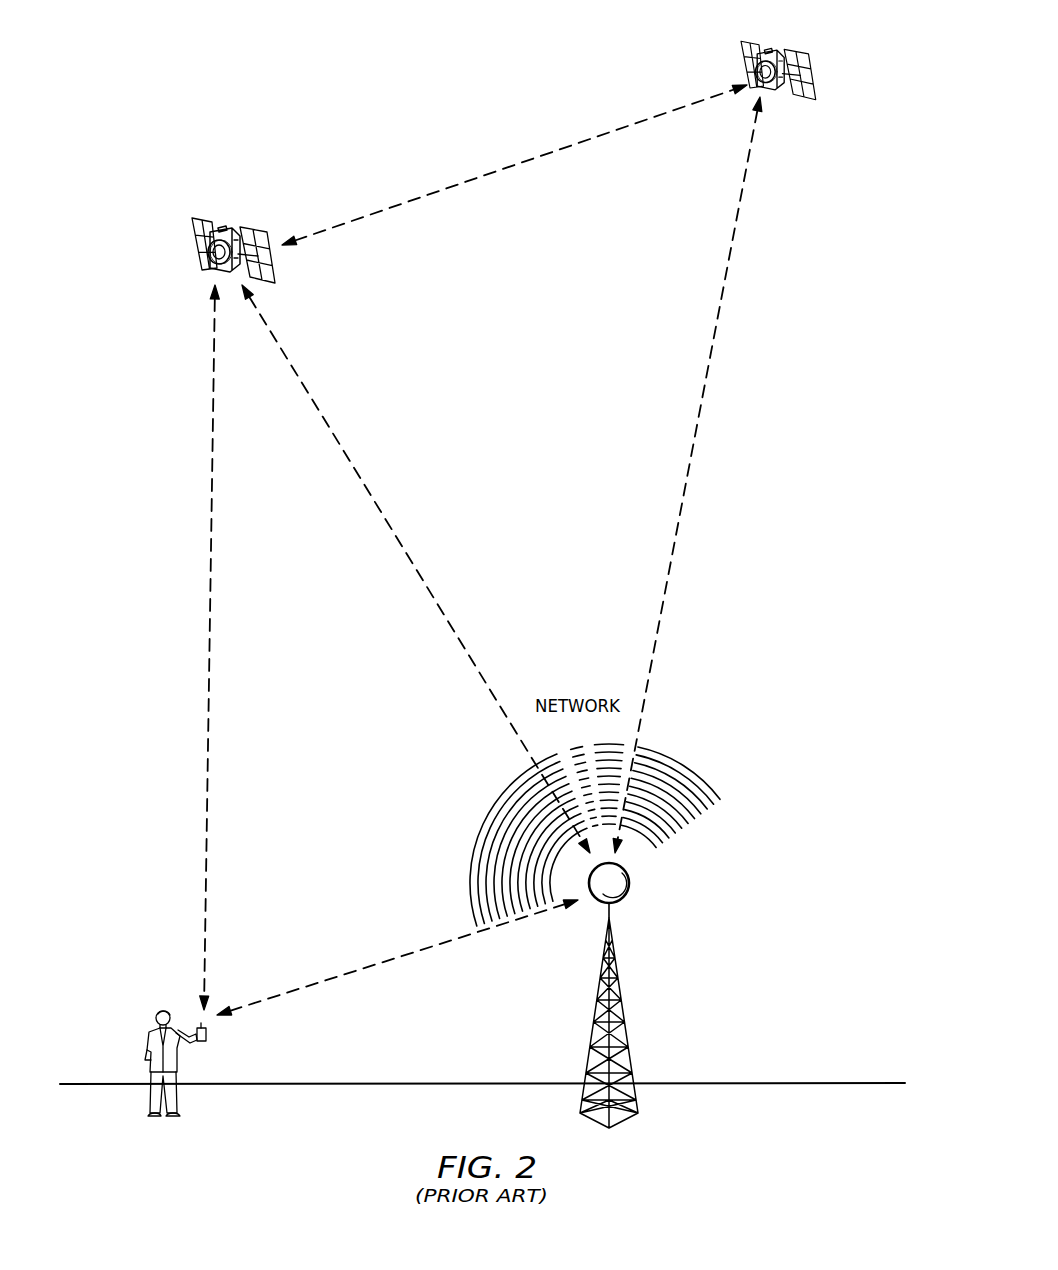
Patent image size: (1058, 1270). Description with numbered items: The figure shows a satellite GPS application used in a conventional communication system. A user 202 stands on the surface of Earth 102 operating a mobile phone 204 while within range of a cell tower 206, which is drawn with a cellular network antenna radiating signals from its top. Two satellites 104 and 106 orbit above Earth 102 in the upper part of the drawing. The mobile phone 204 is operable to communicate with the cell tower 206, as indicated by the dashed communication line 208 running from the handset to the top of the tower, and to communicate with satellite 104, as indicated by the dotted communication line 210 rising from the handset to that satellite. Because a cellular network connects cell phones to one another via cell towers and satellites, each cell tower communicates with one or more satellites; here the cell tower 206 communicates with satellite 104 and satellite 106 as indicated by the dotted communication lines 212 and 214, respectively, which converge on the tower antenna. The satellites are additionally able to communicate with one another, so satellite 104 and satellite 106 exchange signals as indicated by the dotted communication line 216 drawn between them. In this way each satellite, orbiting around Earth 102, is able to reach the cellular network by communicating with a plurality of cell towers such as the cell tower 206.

The Earth 102 is at (793, 1082).
The satellite 104 is at (228, 232).
The satellite 106 is at (773, 56).
The user 202 is at (150, 1050).
The mobile phone 204 is at (208, 1037).
The cell tower 206 is at (625, 1005).
The dashed communication line 208 is at (383, 962).
The dotted communication line 210 is at (209, 655).
The dotted communication line 212 is at (392, 528).
The dotted communication line 214 is at (697, 437).
The dotted communication line 216 is at (515, 165).